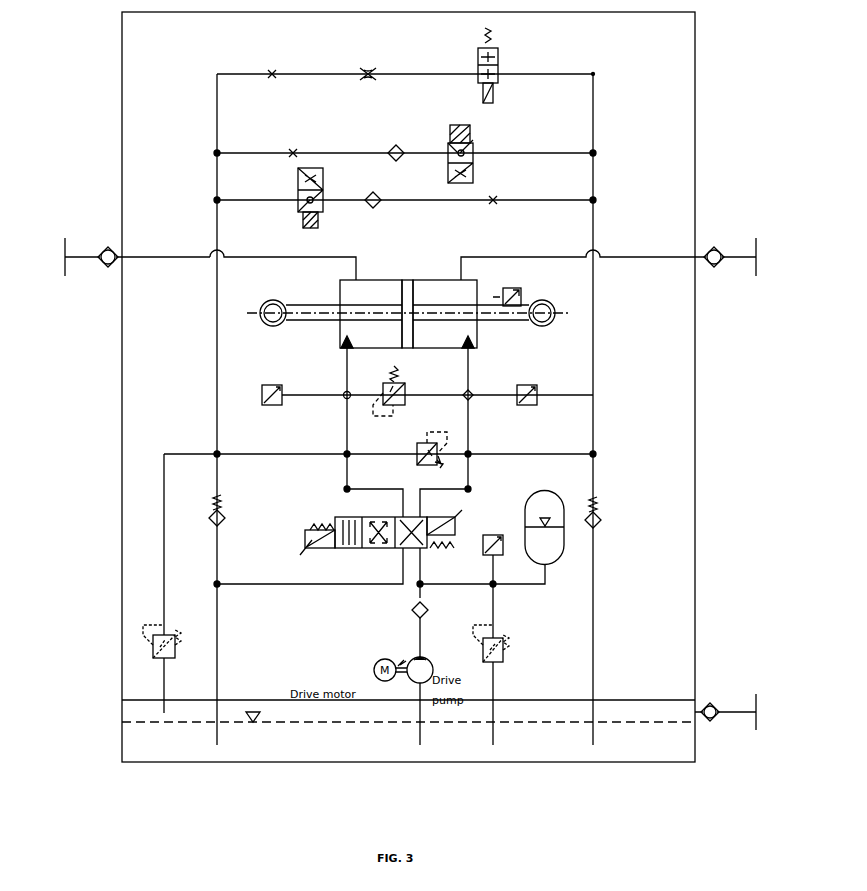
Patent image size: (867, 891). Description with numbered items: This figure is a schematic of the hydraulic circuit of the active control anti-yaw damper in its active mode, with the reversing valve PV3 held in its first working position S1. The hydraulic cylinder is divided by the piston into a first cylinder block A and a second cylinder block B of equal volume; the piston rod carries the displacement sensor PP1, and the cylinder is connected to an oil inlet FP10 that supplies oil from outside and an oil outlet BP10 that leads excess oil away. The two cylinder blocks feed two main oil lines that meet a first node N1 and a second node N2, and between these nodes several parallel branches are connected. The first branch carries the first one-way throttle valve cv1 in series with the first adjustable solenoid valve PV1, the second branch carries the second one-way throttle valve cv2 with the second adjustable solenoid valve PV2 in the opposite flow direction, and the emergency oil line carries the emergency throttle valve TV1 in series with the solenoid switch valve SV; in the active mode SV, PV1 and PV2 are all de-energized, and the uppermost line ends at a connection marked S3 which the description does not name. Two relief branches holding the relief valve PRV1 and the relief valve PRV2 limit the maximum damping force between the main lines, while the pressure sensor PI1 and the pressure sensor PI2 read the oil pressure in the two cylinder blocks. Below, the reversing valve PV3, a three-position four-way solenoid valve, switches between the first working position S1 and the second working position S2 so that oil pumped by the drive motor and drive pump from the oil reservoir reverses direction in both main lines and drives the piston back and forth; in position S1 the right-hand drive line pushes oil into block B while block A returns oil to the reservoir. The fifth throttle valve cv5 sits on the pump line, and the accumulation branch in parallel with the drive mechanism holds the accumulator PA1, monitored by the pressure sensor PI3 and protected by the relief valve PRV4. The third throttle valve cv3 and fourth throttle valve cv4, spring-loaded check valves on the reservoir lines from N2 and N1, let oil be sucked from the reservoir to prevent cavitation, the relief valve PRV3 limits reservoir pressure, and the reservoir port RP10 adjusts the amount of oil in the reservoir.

The emergency throttle valve TV1 is at (405, 66).
The solenoid switch valve SV is at (504, 65).
The port S3 is at (604, 76).
The first one-way throttle valve cv1 is at (384, 150).
The first adjustable solenoid valve PV1 is at (474, 154).
The first working position S1 is at (479, 358).
The second adjustable solenoid valve PV2 is at (295, 198).
The second one-way throttle valve cv2 is at (384, 195).
The second working position S2 is at (523, 382).
The oil inlet FP10 is at (137, 258).
The oil outlet BP10 is at (725, 258).
The displacement sensor PP1 is at (507, 288).
The first cylinder block A is at (371, 314).
The second cylinder block B is at (445, 314).
The pressure sensor PI2 is at (270, 403).
The pressure sensor PI1 is at (525, 403).
The relief valve PRV2 is at (402, 391).
The first node N1 is at (255, 444).
The second node N2 is at (471, 454).
The relief valve PRV1 is at (412, 451).
The reversing valve PV3 is at (377, 528).
The fourth throttle valve cv4 is at (202, 508).
The third throttle valve cv3 is at (604, 508).
The fifth throttle valve cv5 is at (403, 609).
The pressure sensor PI3 is at (493, 552).
The relief valve PRV4 is at (497, 664).
The accumulator PA1 is at (549, 536).
The relief valve PRV3 is at (173, 583).
The reservoir port RP10 is at (725, 715).